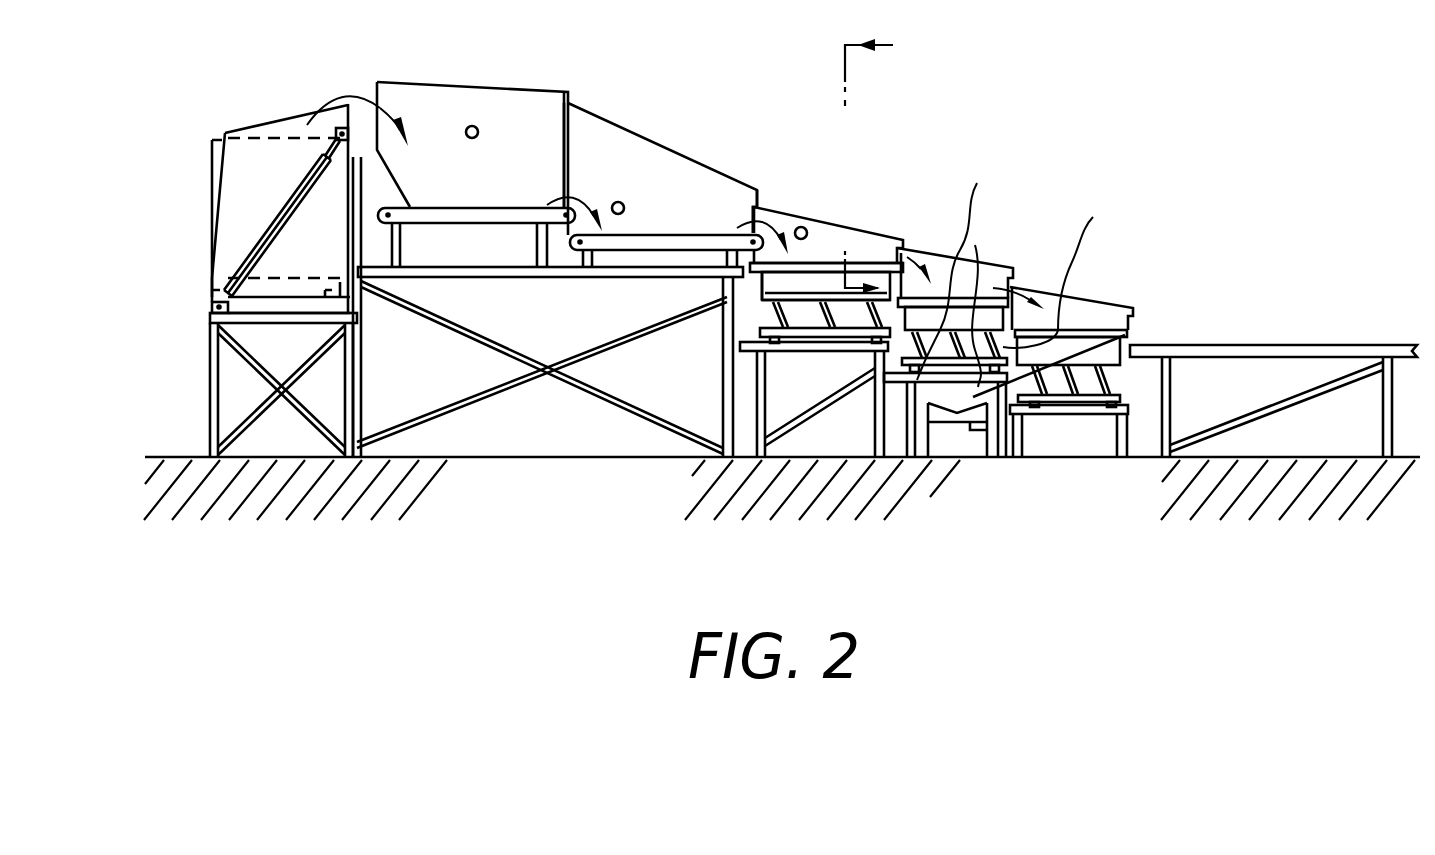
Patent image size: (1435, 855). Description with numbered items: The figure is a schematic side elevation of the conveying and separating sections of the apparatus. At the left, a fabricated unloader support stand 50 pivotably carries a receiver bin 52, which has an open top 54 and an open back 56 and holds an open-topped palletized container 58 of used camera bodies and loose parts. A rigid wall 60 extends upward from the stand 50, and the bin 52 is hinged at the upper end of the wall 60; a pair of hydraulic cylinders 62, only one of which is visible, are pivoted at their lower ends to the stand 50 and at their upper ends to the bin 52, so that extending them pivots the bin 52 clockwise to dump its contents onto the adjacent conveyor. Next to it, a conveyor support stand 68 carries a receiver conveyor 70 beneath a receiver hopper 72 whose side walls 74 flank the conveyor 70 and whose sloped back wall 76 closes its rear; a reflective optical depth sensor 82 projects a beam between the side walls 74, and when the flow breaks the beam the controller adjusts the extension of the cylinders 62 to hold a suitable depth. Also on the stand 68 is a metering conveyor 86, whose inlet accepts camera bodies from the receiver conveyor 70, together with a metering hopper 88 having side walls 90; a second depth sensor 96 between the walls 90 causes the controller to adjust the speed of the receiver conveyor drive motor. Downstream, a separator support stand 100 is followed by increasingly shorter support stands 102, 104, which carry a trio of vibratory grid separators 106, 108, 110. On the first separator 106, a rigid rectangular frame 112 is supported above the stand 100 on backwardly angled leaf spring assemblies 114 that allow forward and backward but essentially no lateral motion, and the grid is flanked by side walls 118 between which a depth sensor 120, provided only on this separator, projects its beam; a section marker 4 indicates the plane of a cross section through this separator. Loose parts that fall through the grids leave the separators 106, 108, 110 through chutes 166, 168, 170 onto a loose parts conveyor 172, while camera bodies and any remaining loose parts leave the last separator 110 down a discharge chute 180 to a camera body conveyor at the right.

The section line 4- 4 is at (859, 163).
The unloader support stand 50 is at (210, 405).
The receiver bin 52 is at (270, 129).
The open top 54 is at (370, 48).
The open back 56 is at (192, 160).
The palletized container 58 is at (214, 182).
The rigid wall 60 is at (380, 272).
The hydraulic cylinders 62 is at (303, 200).
The conveyor support stand 68 is at (562, 385).
The receiver conveyor 70 is at (425, 221).
The receiver hopper 72 is at (505, 58).
The side walls 74 is at (534, 115).
The sloped back wall 76 is at (400, 180).
The reflective optical depth sensor 82 is at (478, 133).
The metering conveyor 86 is at (645, 250).
The metering hopper 88 is at (729, 118).
The side walls 90 is at (732, 196).
The reflective optical depth sensor 96 is at (618, 202).
The separator support stand 100 is at (812, 415).
The support stand 102 is at (905, 375).
The support stand 104 is at (1098, 418).
The vibratory grid separator 106 is at (928, 169).
The vibratory grid separator 108 is at (1061, 213).
The vibratory grid separator 110 is at (1098, 260).
The rigid rectangular frame 112 is at (762, 290).
The leaf spring assemblies 114 is at (750, 336).
The side walls 118 is at (848, 243).
The reflective optical depth sensor 120 is at (803, 226).
The chute 166 is at (958, 260).
The chute 168 is at (1067, 267).
The chute 170 is at (1110, 294).
The loose parts conveyor 172 is at (950, 425).
The discharge chute 180 is at (1153, 318).